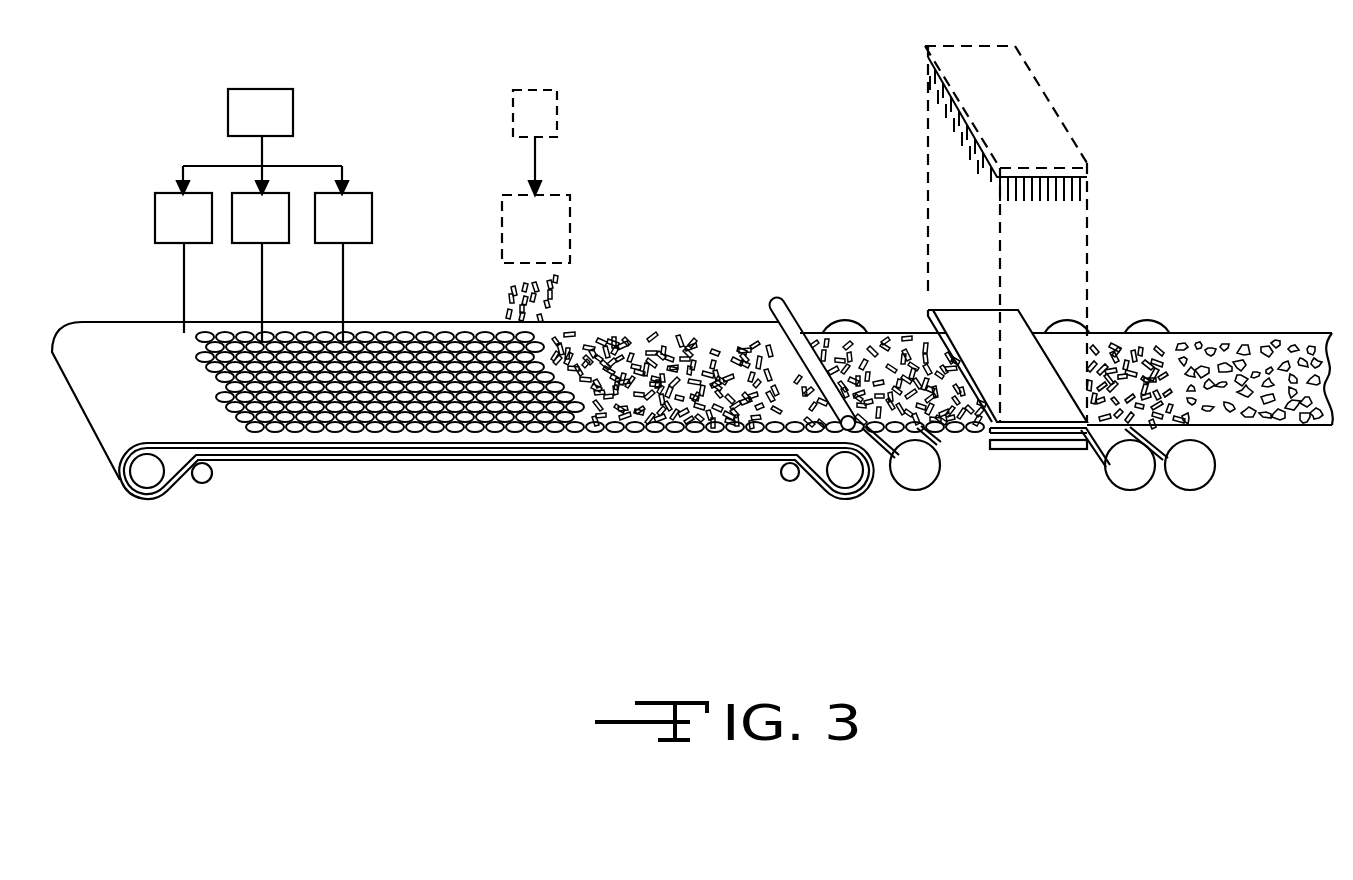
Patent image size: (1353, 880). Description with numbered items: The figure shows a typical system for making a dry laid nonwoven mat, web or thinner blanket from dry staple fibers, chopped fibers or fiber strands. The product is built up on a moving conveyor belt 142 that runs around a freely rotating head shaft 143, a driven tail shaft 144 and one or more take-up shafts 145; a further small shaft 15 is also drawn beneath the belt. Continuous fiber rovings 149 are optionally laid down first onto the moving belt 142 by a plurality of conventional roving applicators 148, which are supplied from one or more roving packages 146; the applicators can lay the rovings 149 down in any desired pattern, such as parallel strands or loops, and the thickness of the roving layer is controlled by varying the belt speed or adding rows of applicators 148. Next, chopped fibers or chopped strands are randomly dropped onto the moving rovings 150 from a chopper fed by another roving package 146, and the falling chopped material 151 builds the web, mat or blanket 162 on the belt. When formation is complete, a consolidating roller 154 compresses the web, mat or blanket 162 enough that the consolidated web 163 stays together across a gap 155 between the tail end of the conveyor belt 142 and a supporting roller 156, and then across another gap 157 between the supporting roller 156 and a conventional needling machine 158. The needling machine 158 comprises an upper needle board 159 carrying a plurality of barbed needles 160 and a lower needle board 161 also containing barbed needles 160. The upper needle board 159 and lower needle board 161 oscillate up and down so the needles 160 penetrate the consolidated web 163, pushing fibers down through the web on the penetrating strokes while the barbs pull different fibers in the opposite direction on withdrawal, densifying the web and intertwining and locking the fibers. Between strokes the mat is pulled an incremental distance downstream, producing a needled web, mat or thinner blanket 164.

The idler roller 15 is at (783, 483).
The conveyor belt 142 is at (125, 320).
The head shaft 143 is at (153, 473).
The tail shaft 144 is at (825, 492).
The take-up shaft 145 is at (210, 480).
The roving package 146 is at (293, 110).
The roving applicator 148 is at (200, 232).
The continuous fiber roving 149 is at (185, 292).
The moving rovings 150 is at (405, 334).
The dispensed particles 151 is at (560, 306).
The consolidating roller 154 is at (786, 313).
The gap 155 is at (873, 468).
The supporting roller 156 is at (917, 469).
The gap 157 is at (988, 448).
The needling machine 158 is at (1058, 453).
The upper needle board 159 is at (1047, 396).
The barbed needles 160 is at (1085, 190).
The lower needle board 161 is at (953, 447).
The web, mat or blanket 162 is at (701, 328).
The consolidated web 163 is at (906, 335).
The needled web, mat or thinner blanket 164 is at (1138, 345).